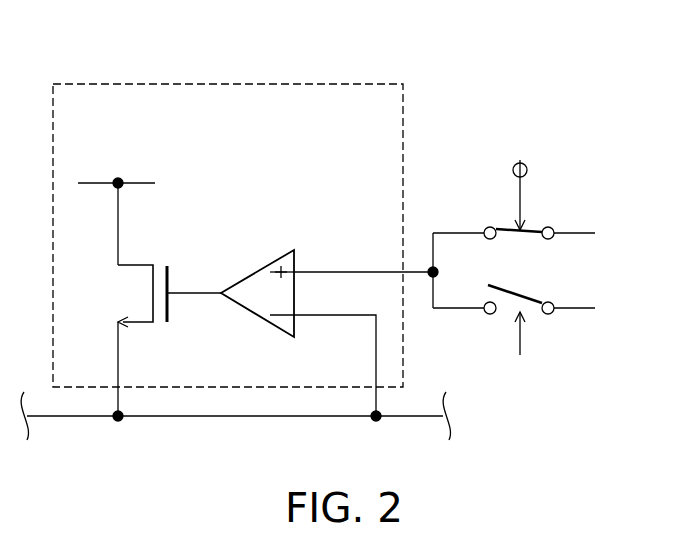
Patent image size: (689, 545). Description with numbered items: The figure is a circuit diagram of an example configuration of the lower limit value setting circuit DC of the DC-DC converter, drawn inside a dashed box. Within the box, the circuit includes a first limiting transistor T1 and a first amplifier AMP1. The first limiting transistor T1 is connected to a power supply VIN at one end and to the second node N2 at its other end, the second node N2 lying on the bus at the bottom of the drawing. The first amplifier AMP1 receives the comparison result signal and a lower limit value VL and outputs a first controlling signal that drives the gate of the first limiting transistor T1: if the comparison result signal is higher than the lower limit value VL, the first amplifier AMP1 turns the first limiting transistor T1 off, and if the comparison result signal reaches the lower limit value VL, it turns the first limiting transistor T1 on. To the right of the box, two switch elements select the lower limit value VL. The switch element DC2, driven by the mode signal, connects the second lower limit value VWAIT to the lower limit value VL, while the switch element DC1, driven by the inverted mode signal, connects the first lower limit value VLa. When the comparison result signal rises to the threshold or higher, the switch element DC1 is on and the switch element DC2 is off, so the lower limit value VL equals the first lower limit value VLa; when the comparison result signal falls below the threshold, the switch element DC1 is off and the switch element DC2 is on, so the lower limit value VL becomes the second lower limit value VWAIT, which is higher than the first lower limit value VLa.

The lower limit value setting circuit DC is at (228, 84).
The power supply VIN is at (116, 204).
The first limiting transistor T1 is at (137, 265).
The first amplifier AMP1 is at (254, 272).
The lower limit value VL is at (366, 260).
The switch element DC2 is at (530, 230).
The switch element DC1 is at (530, 313).
The second lower limit value VWAIT is at (633, 236).
The first lower limit value VLa is at (620, 313).
The second node N2 is at (118, 421).